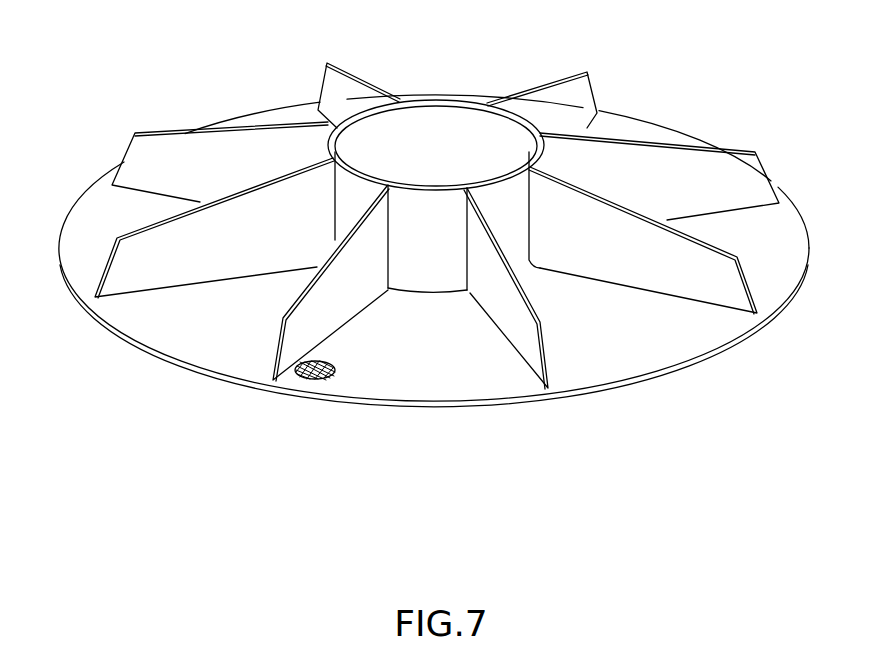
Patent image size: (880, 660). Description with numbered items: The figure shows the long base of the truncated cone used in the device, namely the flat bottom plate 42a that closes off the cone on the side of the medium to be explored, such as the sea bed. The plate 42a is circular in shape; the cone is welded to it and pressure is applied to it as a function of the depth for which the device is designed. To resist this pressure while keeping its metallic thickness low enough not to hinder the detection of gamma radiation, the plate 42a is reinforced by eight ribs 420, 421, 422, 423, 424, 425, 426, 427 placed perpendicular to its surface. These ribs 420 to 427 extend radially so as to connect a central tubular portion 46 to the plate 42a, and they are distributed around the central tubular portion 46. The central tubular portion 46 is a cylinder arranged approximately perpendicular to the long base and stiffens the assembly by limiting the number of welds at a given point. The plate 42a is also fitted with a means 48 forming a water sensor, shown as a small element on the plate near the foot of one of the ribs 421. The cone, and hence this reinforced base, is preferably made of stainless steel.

The flat bottom plate 42a is at (713, 357).
The central tubular portion 46 is at (440, 117).
The water sensor means 48 is at (305, 380).
The rib 420 is at (130, 273).
The rib 421 is at (342, 313).
The rib 422 is at (530, 347).
The rib 423 is at (732, 285).
The rib 424 is at (717, 165).
The rib 425 is at (580, 102).
The rib 426 is at (331, 84).
The rib 427 is at (147, 153).